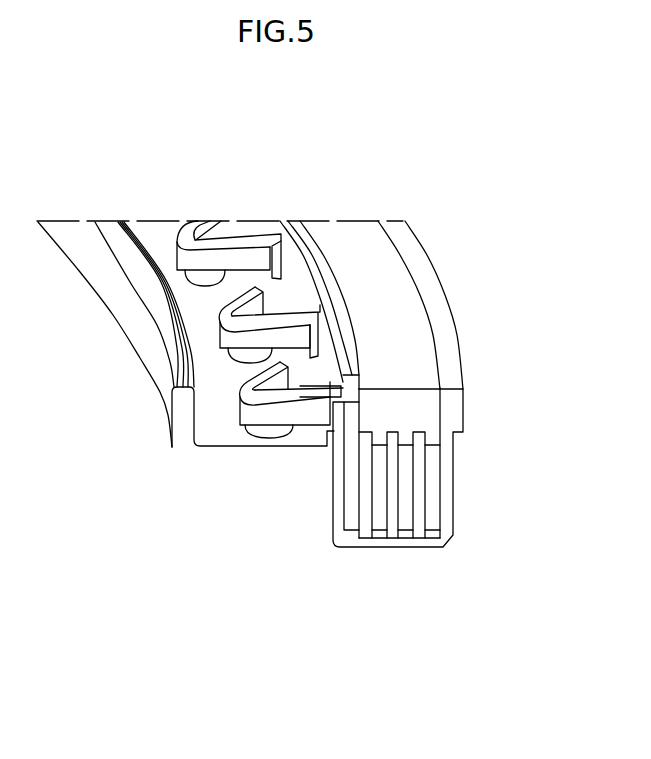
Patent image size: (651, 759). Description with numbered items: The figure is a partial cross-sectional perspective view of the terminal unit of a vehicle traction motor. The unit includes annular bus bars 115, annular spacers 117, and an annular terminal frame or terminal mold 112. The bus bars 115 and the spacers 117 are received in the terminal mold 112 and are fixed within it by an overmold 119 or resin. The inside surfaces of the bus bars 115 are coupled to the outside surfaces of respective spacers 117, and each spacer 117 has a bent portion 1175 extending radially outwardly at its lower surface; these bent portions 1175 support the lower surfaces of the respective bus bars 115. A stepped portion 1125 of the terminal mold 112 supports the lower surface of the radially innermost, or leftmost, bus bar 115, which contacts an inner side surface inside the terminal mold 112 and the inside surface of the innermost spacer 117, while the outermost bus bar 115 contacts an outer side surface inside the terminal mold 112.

The overmold 119 is at (343, 227).
The terminal mold 112 is at (447, 497).
The bus bars 115 is at (433, 458).
The spacers 117 is at (420, 495).
The stepped portion 1125 is at (350, 530).
The bent portion 1175 is at (427, 535).